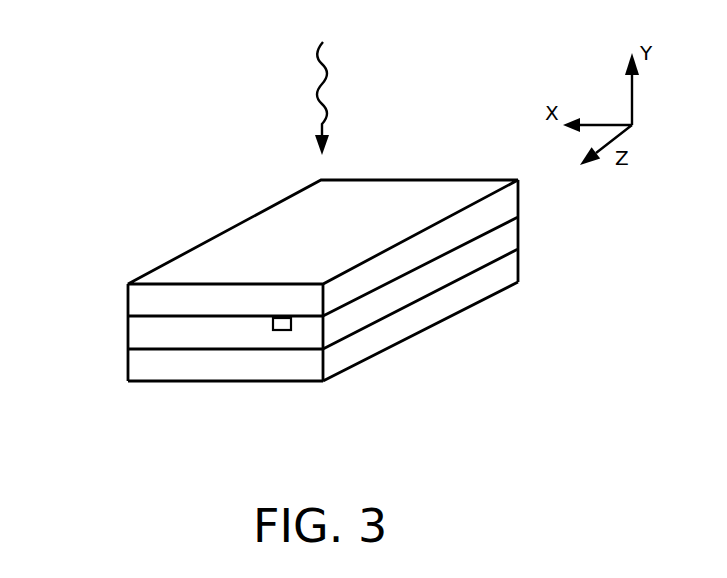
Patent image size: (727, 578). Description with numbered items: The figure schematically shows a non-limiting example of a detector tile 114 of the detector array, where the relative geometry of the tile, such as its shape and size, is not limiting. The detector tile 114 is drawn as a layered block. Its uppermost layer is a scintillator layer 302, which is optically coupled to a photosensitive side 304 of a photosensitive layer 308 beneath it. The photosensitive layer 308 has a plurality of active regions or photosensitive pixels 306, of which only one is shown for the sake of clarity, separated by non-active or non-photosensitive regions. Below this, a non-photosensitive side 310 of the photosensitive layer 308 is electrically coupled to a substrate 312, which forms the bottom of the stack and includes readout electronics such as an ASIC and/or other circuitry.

The detector tile 114 is at (159, 99).
The scintillator layer 302 is at (157, 266).
The photosensitive side 304 is at (147, 316).
The photosensitive pixel 306 is at (282, 331).
The photosensitive layer 308 is at (128, 335).
The non-photosensitive side 310 is at (147, 349).
The substrate 312 is at (165, 382).